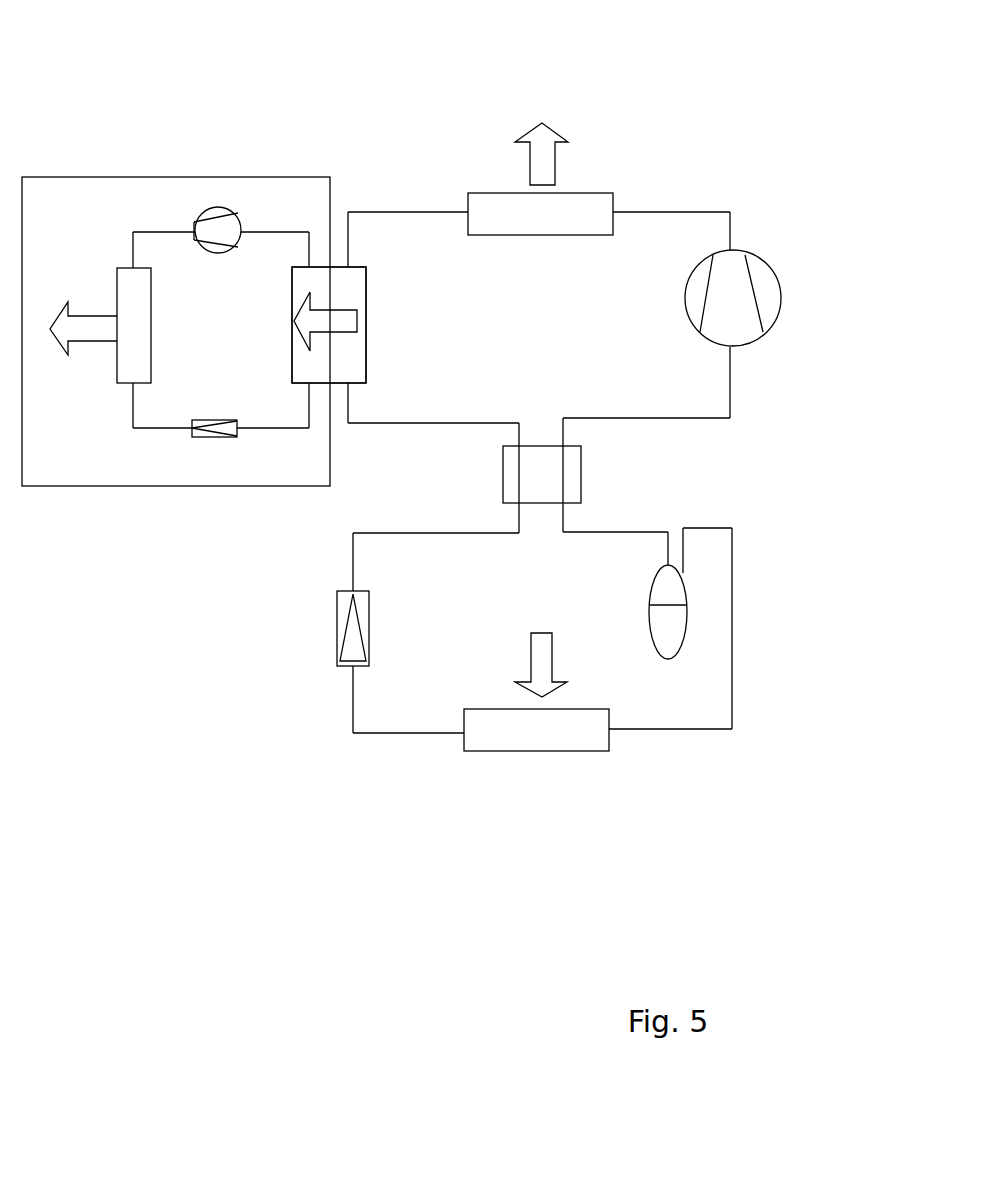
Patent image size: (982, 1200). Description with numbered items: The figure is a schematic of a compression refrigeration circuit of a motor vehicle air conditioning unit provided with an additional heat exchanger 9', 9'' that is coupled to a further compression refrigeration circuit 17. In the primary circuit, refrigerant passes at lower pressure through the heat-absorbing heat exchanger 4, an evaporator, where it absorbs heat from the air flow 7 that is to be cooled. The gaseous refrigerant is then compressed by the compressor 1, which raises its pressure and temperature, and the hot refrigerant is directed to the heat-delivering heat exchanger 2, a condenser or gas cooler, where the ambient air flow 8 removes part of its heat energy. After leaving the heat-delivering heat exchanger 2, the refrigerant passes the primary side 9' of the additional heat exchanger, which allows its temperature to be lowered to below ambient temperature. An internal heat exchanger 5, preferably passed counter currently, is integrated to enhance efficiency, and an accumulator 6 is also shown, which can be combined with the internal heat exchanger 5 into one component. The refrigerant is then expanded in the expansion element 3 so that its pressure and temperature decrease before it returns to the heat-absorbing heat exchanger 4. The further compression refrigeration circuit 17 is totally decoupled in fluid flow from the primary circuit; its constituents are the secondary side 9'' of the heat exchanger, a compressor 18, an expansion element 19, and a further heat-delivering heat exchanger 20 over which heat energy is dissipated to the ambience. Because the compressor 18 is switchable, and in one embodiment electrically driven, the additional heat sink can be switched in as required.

The compressor 1 is at (730, 318).
The heat-delivering heat exchanger 2 is at (570, 213).
The expansion element 3 is at (353, 642).
The heat-absorbing heat exchanger 4 is at (553, 737).
The internal heat exchanger 5 is at (572, 467).
The accumulator 6 is at (670, 630).
The air flow 7 is at (543, 653).
The ambient air flow 8 is at (542, 135).
The additional heat exchanger primary side 9' is at (352, 214).
The secondary side of the heat exchanger 9'' is at (298, 430).
The further compression refrigeration circuit 17 is at (153, 198).
The compressor 18 is at (233, 213).
The expansion element 19 is at (210, 438).
The further heat-delivering heat exchanger 20 is at (133, 366).